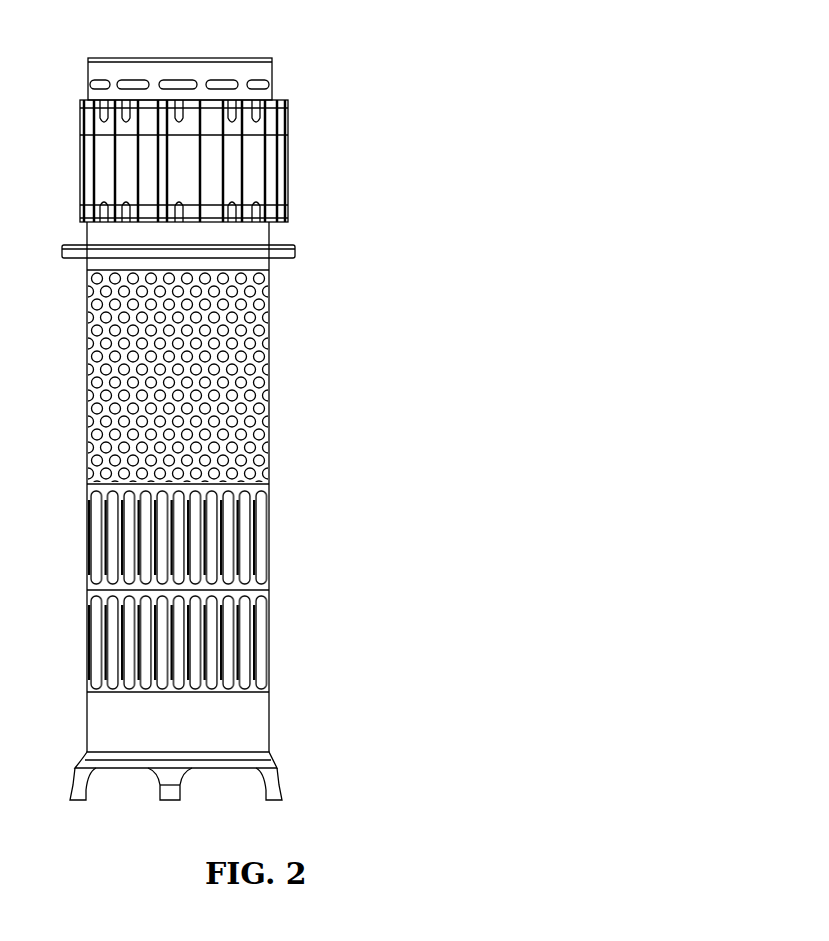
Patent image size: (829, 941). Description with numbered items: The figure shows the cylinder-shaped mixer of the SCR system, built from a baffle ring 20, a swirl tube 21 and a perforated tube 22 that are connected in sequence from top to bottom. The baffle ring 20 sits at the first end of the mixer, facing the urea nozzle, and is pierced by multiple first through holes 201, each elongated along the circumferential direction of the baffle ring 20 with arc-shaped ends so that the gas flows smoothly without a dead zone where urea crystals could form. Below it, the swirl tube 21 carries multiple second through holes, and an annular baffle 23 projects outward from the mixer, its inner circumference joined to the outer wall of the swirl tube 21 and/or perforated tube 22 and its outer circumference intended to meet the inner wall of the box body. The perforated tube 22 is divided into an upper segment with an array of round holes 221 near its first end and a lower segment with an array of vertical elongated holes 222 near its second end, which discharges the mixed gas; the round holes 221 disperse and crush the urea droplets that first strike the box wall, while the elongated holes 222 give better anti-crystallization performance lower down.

The baffle ring 20 is at (272, 68).
The first through holes 201 is at (272, 83).
The swirl tube 21 is at (298, 165).
The annular baffle 23 is at (295, 253).
The perforated tube 22 is at (270, 484).
The round holes 221 is at (270, 347).
The elongated holes 222 is at (180, 555).